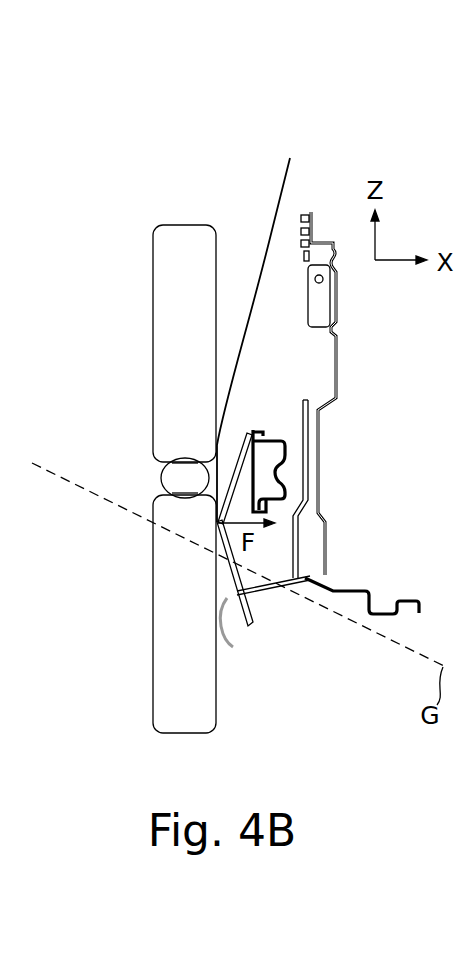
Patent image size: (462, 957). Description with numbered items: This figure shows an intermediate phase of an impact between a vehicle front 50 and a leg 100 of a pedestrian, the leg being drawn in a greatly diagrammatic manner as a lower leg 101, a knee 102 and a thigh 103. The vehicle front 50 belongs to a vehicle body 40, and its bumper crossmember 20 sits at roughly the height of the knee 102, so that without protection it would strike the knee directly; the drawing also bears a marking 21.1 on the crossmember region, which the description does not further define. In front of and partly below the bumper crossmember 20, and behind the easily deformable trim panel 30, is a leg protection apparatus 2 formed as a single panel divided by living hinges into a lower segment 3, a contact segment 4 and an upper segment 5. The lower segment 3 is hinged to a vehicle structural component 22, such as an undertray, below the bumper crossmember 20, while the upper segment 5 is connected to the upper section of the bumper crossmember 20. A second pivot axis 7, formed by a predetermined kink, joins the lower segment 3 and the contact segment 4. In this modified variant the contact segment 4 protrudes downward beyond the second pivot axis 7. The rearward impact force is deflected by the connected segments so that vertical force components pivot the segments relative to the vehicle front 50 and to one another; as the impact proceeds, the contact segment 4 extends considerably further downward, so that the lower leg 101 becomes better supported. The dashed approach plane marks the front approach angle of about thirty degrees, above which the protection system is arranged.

The leg 100 is at (112, 255).
The lower leg 101 is at (166, 626).
The knee 102 is at (160, 478).
The thigh 103 is at (166, 358).
The vehicle front 50 is at (223, 195).
The trim panel 30 is at (272, 215).
The vehicle body 40 is at (335, 142).
The bumper crossmember 20 is at (280, 440).
The contact element 21.1 is at (260, 410).
The vehicle structural component 22 is at (357, 603).
The leg protection apparatus 2 is at (266, 607).
The lower segment 3 is at (288, 587).
The contact segment 4 is at (240, 582).
The upper segment 5 is at (237, 443).
The second pivot axis 7 is at (231, 637).